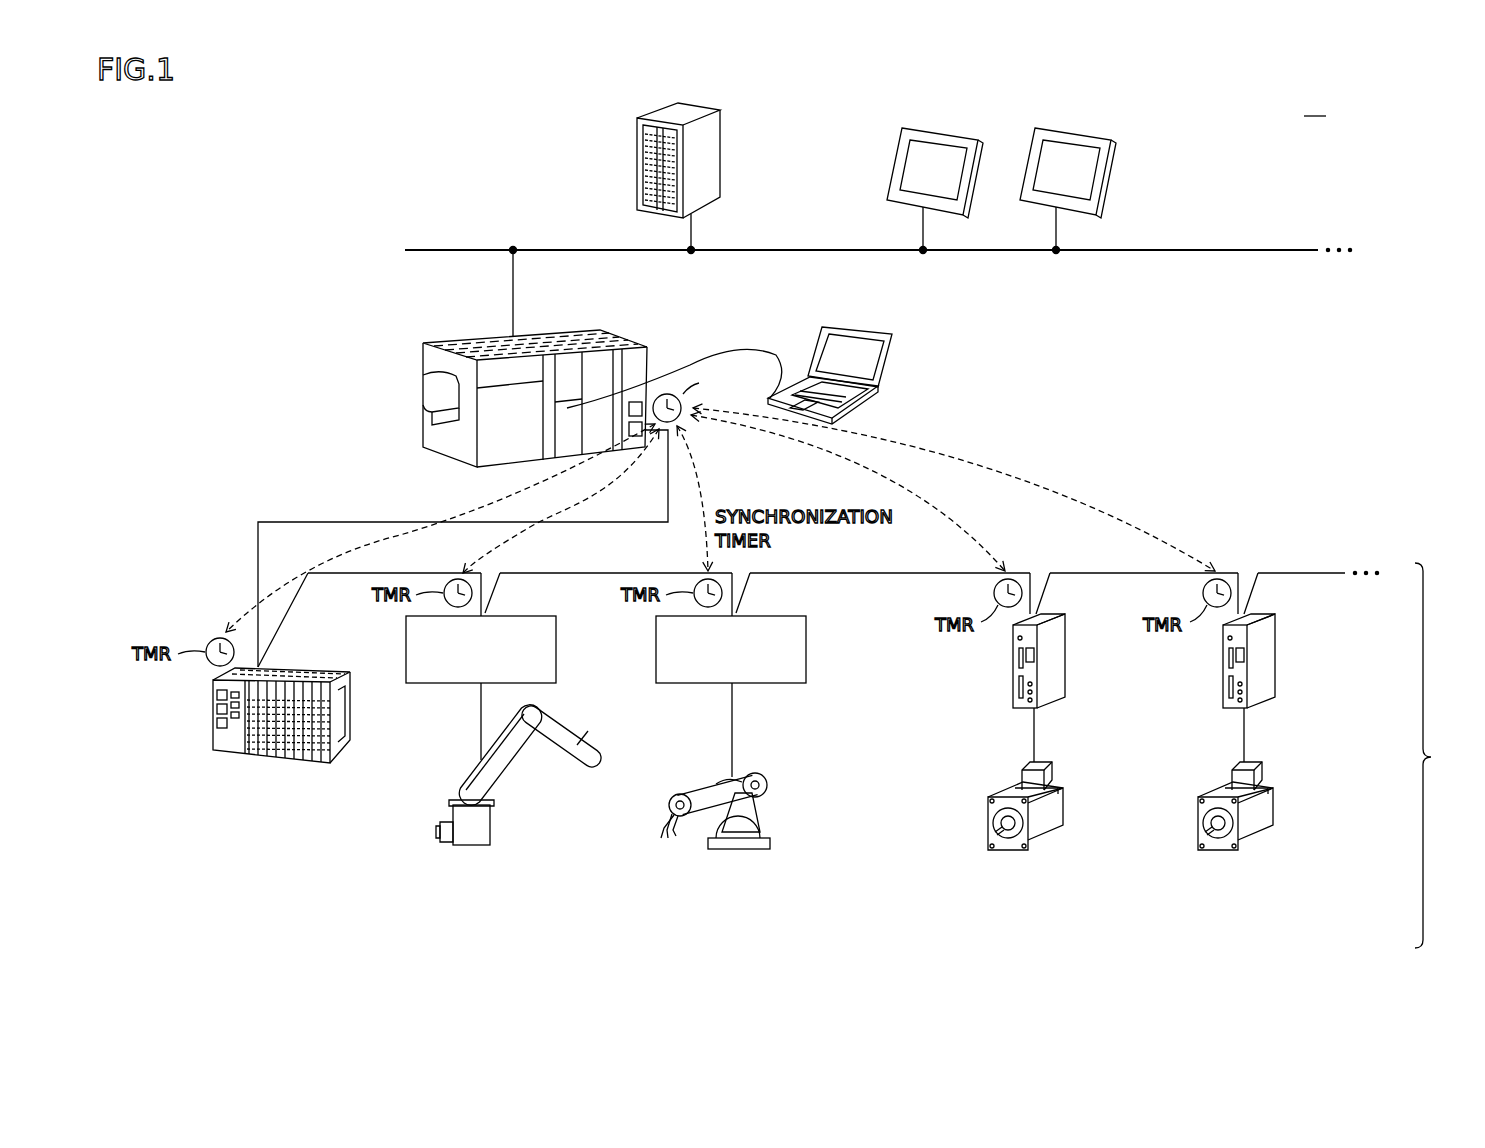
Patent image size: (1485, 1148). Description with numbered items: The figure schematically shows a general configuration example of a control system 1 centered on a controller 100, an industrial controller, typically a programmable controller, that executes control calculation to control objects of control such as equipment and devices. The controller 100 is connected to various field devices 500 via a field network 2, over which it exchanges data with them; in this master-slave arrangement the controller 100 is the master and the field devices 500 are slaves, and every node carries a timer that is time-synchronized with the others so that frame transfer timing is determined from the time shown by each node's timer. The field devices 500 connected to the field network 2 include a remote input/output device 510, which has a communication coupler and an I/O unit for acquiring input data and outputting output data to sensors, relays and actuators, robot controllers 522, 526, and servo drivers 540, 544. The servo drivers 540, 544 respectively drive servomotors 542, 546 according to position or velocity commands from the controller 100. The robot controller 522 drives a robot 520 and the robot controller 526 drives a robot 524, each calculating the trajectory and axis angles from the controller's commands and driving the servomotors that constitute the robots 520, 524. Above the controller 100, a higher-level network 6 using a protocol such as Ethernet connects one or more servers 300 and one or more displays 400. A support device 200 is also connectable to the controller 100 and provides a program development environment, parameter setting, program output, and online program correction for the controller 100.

The control system 1 is at (1315, 104).
The field network 2 is at (596, 522).
The higher-level network 6 is at (1267, 250).
The controller 100 is at (674, 332).
The support device 200 is at (888, 355).
The server 300 is at (721, 142).
The display 400 is at (951, 133).
The field devices 500 is at (1444, 755).
The remote input/output device 510 is at (278, 766).
The robot 520 is at (474, 848).
The robot controller 522 is at (521, 616).
The robot 524 is at (740, 851).
The robot controller 526 is at (771, 616).
The servo driver 540 is at (1012, 680).
The servomotor 542 is at (1065, 803).
The servo driver 544 is at (1222, 680).
The servomotor 546 is at (1275, 803).